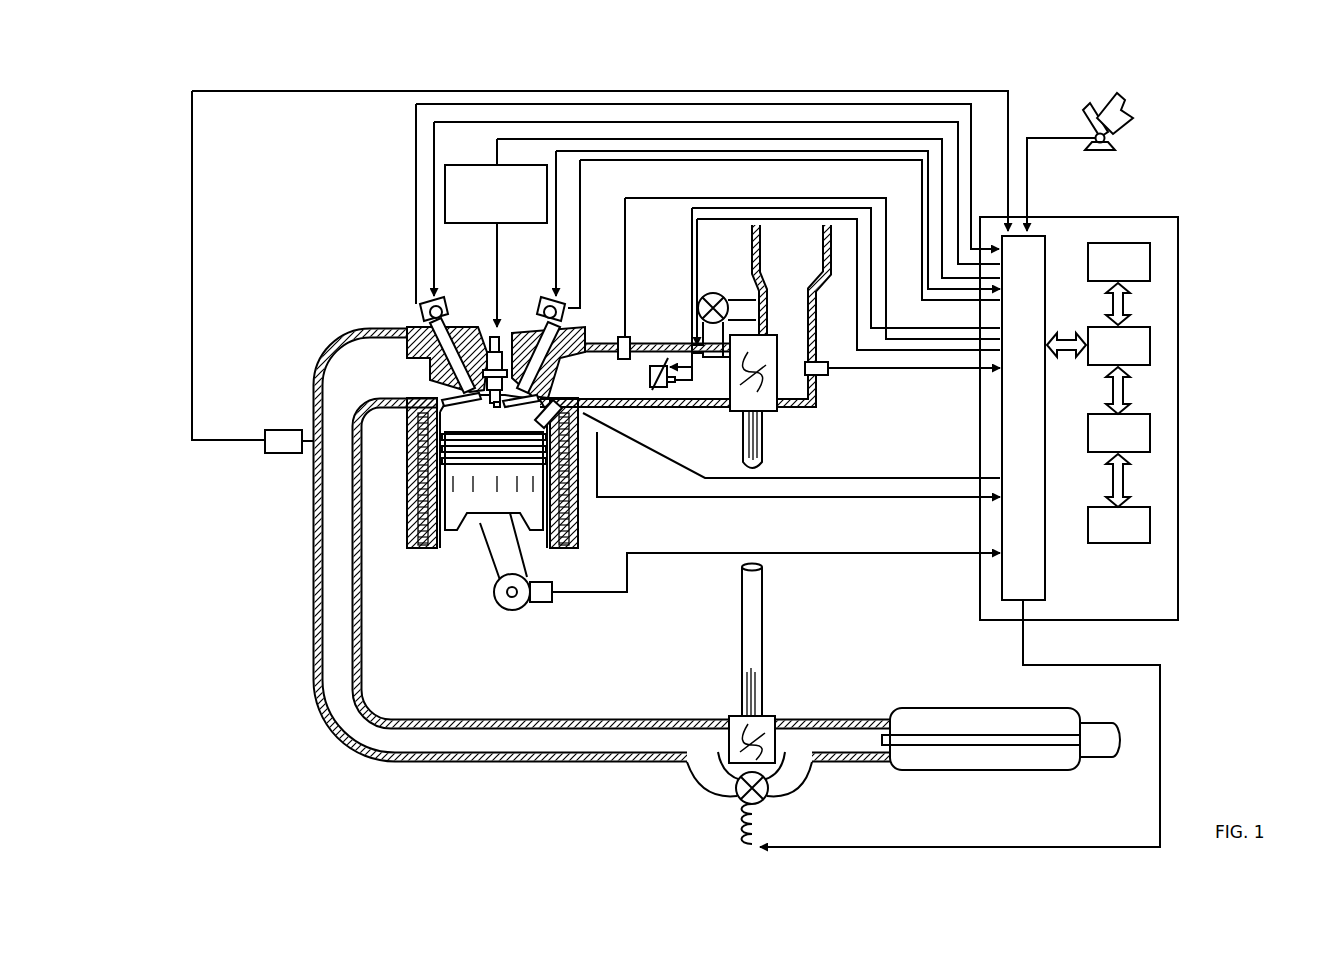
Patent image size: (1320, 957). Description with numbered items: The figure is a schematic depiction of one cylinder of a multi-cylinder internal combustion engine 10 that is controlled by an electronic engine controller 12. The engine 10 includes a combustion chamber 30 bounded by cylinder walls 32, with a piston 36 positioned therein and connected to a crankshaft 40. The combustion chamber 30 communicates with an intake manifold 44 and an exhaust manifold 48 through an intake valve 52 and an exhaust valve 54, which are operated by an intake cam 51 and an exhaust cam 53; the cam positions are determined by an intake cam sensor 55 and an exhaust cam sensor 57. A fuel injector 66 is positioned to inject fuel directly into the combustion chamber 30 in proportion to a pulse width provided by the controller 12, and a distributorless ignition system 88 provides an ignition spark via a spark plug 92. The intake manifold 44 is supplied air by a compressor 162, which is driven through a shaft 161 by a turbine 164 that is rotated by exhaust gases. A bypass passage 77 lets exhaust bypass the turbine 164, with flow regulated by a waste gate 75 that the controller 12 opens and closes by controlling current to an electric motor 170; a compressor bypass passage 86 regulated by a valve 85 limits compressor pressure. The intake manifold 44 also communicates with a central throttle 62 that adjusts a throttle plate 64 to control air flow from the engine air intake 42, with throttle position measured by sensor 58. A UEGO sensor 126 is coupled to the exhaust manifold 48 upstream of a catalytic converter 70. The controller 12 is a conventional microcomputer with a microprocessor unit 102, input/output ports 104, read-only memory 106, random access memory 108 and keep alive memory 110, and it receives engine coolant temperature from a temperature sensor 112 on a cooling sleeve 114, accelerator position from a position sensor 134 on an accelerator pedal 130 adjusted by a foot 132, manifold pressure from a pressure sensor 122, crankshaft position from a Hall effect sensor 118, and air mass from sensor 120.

The internal combustion engine 10 is at (350, 288).
The electronic engine controller 12 is at (1178, 218).
The combustion chamber 30 is at (440, 490).
The cylinder walls 32 is at (437, 545).
The piston 36 is at (480, 520).
The crankshaft 40 is at (500, 608).
The engine air intake 42 is at (798, 265).
The intake manifold 44 is at (615, 386).
The exhaust manifold 48 is at (388, 391).
The intake cam 51 is at (548, 297).
The intake valve 52 is at (500, 360).
The exhaust cam 53 is at (443, 297).
The exhaust valve 54 is at (425, 372).
The intake cam sensor 55 is at (566, 318).
The exhaust cam sensor 57 is at (425, 312).
The throttle position sensor 58 is at (671, 384).
The central throttle 62 is at (655, 365).
The throttle plate 64 is at (670, 360).
The fuel injector 66 is at (578, 410).
The catalytic converter 70 is at (895, 768).
The waste gate 75 is at (768, 788).
The bypass passage 77 is at (690, 765).
The valve 85 is at (713, 293).
The compressor bypass passage 86 is at (750, 300).
The distributorless ignition system 88 is at (458, 165).
The spark plug 92 is at (490, 345).
The microprocessor unit 102 is at (1150, 345).
The input/output ports 104 is at (1045, 245).
The read-only memory 106 is at (1150, 262).
The random access memory 108 is at (1150, 432).
The keep alive memory 110 is at (1150, 525).
The temperature sensor 112 is at (585, 490).
The cooling sleeve 114 is at (580, 520).
The Hall effect sensor 118 is at (540, 604).
The air mass sensor 120 is at (818, 362).
The pressure sensor 122 is at (625, 335).
The UEGO sensor 126 is at (265, 436).
The accelerator pedal 130 is at (1085, 115).
The foot 132 is at (1130, 107).
The position sensor 134 is at (1110, 140).
The shaft 161 is at (762, 458).
The compressor 162 is at (775, 411).
The turbine 164 is at (729, 718).
The electric motor 170 is at (720, 826).